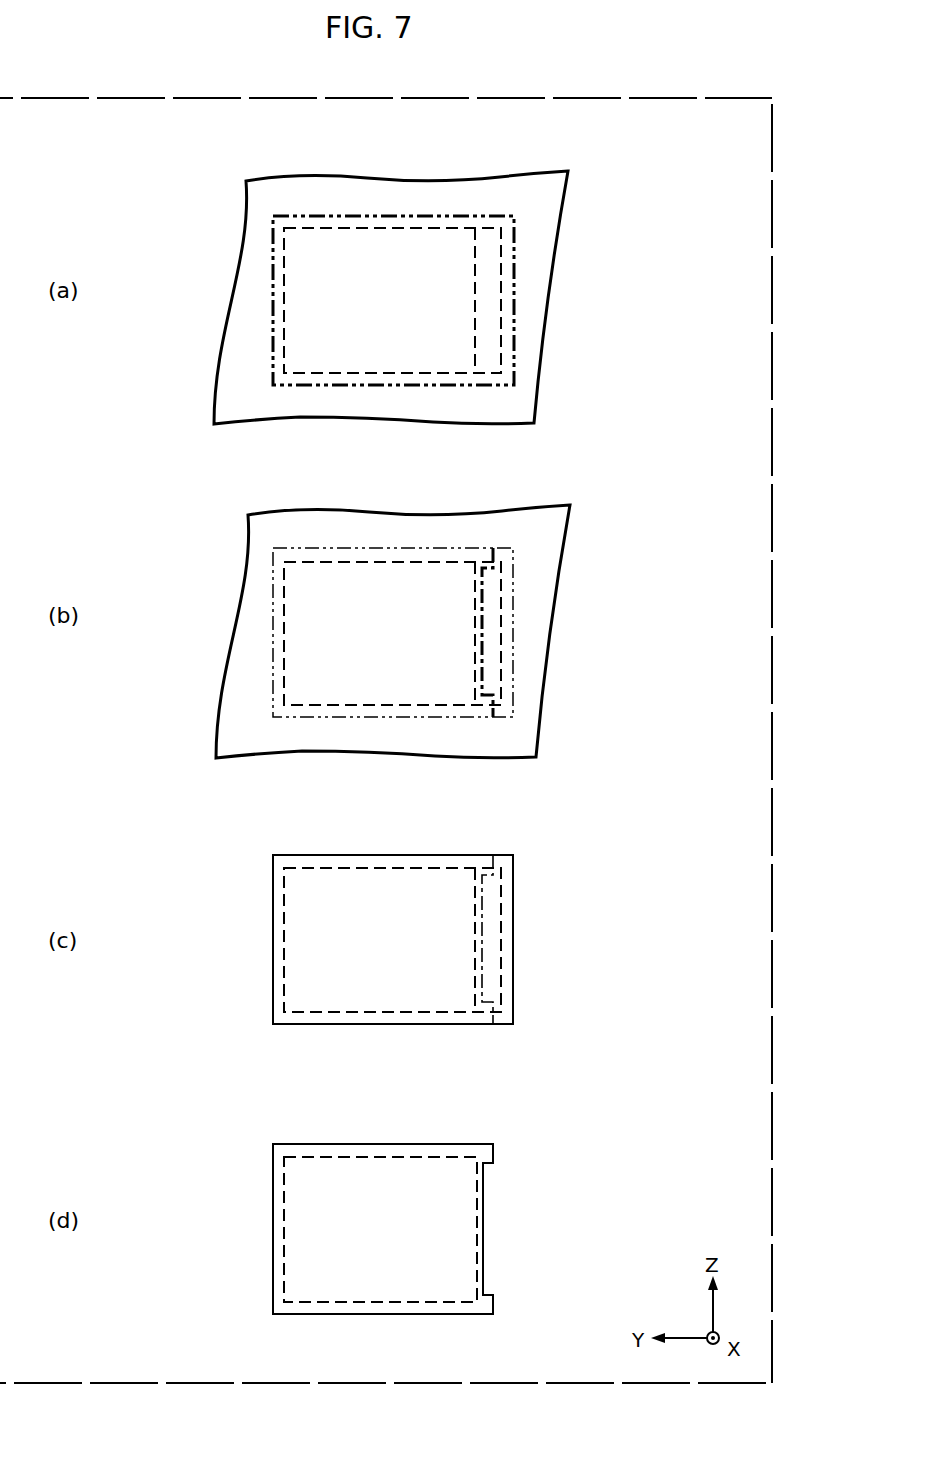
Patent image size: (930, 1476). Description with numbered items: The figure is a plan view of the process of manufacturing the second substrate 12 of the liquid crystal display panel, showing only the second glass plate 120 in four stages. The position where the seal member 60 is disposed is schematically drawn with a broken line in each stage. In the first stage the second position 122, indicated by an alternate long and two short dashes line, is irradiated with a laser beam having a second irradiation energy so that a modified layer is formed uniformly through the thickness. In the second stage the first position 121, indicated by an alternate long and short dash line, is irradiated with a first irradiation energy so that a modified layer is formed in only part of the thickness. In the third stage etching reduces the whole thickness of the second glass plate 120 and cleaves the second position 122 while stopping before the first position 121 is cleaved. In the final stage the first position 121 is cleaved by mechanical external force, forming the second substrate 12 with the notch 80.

The second substrate 12 is at (490, 1147).
The seal member 60 is at (283, 272).
The notch 80 is at (483, 1233).
The second glass plate 120 is at (530, 190).
The first position 121 is at (483, 557).
The second position 122 is at (515, 257).